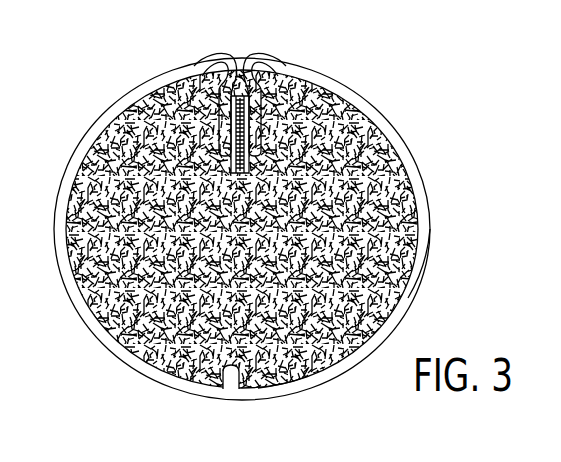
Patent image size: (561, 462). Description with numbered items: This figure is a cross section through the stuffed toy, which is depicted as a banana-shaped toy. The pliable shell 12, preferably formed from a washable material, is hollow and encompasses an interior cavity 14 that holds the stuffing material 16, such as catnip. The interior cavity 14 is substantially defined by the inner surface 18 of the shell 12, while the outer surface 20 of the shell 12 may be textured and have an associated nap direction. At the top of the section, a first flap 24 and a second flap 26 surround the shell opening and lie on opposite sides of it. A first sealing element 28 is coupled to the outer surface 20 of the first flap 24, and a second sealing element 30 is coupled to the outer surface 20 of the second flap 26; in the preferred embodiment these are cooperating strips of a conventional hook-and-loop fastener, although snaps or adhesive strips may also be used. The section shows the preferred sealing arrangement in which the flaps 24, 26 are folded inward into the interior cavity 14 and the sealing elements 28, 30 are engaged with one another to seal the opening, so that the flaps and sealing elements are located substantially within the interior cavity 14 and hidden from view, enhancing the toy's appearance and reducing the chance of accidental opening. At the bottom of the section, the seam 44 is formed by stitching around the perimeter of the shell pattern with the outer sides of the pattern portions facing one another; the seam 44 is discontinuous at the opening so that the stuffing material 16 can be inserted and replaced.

The pliable shell 12 is at (62, 152).
The interior cavity 14 is at (378, 179).
The stuffing material 16 is at (70, 252).
The inner surface 18 is at (272, 371).
The outer surface 20 is at (418, 276).
The first flap 24 is at (211, 118).
The second flap 26 is at (263, 115).
The first sealing element 28 is at (210, 158).
The second sealing element 30 is at (325, 140).
The seam 44 is at (220, 393).